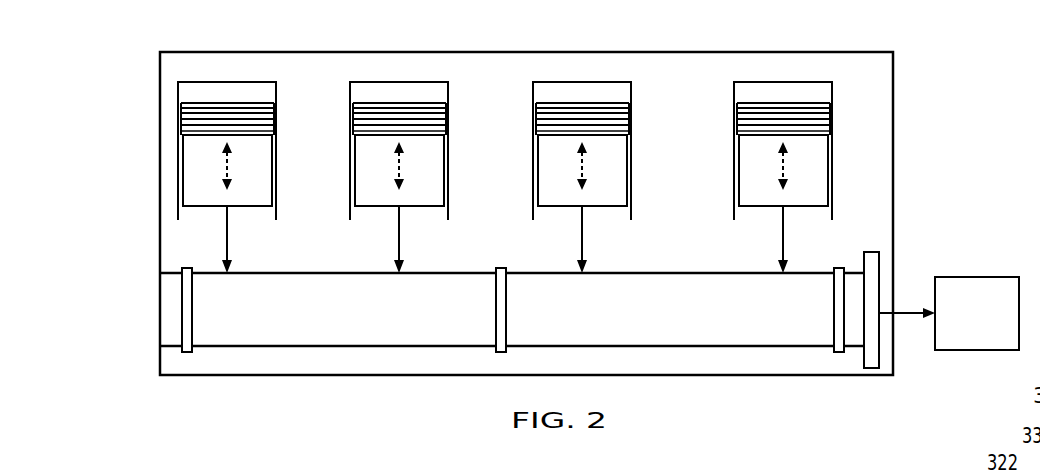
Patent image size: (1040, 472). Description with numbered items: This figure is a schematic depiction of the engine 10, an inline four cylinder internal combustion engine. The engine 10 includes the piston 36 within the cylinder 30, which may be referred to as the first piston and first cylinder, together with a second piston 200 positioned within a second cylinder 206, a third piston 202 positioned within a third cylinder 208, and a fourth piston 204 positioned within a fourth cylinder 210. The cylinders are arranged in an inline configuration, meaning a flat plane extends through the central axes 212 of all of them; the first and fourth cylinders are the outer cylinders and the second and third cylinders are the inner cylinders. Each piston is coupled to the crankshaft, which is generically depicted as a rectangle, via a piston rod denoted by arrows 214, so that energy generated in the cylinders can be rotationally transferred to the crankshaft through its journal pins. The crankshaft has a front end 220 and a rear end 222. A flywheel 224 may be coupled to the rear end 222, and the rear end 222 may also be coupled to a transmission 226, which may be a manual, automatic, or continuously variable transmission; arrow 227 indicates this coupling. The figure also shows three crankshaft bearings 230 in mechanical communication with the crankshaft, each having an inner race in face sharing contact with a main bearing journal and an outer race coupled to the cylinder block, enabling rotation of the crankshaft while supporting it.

The engine 10 is at (177, 52).
The cylinder 30 is at (210, 82).
The piston 36 is at (212, 177).
The second cylinder 206 is at (386, 82).
The third cylinder 208 is at (569, 82).
The fourth cylinder 210 is at (776, 82).
The second piston 200 is at (392, 177).
The third piston 202 is at (576, 177).
The fourth piston 204 is at (777, 177).
The central axes 212 is at (230, 165).
The arrows denoting piston rods 214 is at (228, 222).
The front end 220 is at (160, 306).
The rear end 222 is at (856, 272).
The flywheel 224 is at (880, 352).
The transmission 226 is at (992, 277).
The arrow 227 is at (897, 313).
The crankshaft bearings 230 is at (187, 268).